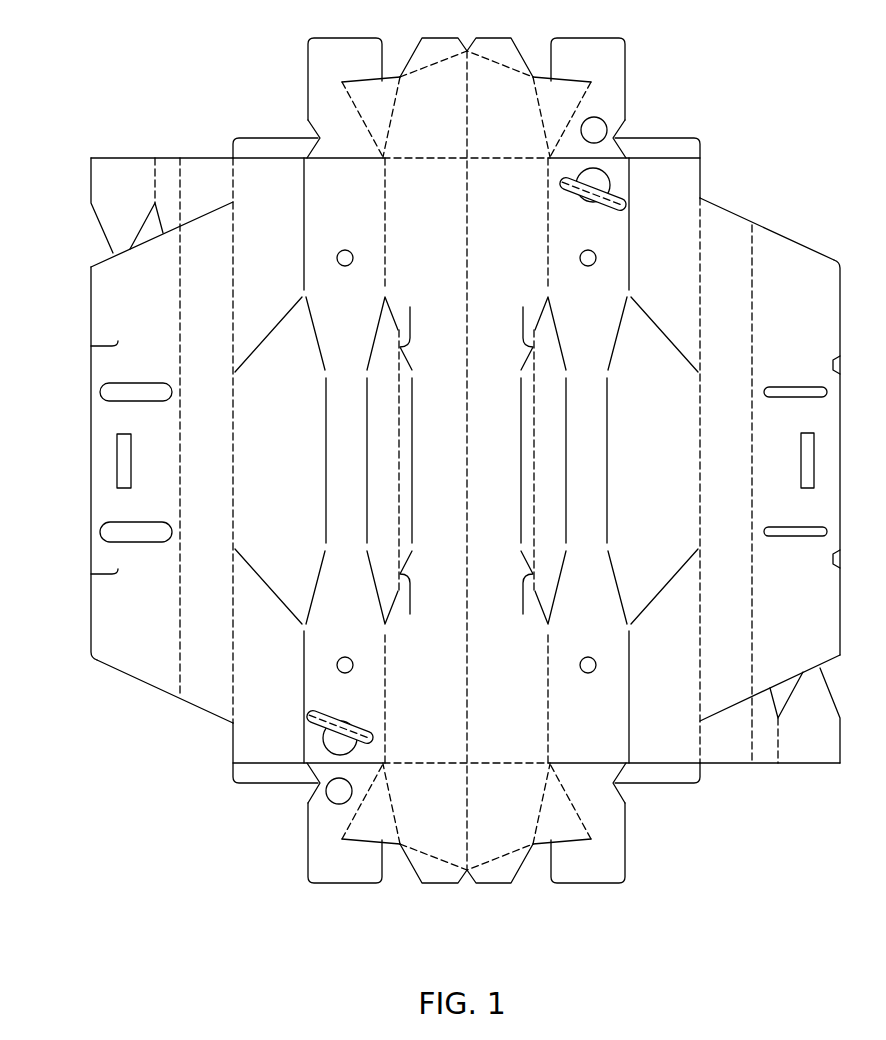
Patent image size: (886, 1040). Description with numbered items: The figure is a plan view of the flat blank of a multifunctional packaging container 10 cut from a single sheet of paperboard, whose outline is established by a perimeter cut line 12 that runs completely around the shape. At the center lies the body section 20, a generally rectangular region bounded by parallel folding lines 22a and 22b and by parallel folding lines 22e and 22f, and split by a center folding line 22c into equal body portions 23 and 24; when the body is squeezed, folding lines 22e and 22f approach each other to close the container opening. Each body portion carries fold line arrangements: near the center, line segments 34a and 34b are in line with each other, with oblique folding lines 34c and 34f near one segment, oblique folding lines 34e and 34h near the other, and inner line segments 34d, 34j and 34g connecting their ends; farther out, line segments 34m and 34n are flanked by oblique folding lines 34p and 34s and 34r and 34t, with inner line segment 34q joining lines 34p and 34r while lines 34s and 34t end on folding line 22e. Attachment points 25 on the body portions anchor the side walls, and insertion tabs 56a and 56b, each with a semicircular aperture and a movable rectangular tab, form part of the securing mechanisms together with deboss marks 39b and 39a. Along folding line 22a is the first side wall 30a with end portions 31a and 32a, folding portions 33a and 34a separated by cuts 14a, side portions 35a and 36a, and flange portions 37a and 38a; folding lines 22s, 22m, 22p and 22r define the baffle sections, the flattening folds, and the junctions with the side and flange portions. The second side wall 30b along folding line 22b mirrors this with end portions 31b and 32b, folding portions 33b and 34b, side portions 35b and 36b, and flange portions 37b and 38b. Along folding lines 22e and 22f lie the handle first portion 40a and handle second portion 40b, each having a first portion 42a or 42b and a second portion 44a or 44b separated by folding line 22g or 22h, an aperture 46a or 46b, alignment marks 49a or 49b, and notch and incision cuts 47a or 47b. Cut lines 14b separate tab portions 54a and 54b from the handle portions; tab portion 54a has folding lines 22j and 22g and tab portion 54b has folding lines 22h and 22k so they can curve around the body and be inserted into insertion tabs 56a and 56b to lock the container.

The multifunctional packaging container 10 is at (774, 120).
The perimeter cut line 12 is at (322, 38).
The cut line 14a is at (371, 80).
The cut line 14b is at (217, 203).
The body section 20 is at (255, 718).
The folding line 22a is at (490, 760).
The folding line 22b is at (460, 160).
The center folding line 22c is at (467, 213).
The folding line 22e is at (235, 435).
The folding line 22f is at (698, 435).
The folding line 22g is at (182, 175).
The folding line 22h is at (750, 483).
The folding line 22j is at (155, 170).
The folding line 22k is at (778, 747).
The folding line 22m is at (368, 133).
The folding line 22p is at (394, 110).
The folding line 22r is at (422, 65).
The folding line 22s is at (310, 147).
The body portion 23 is at (334, 199).
The body portion 24 is at (569, 636).
The attachment point 25 is at (345, 250).
The first side wall 30a is at (603, 798).
The second side wall 30b is at (316, 88).
The end portion 31a is at (322, 872).
The end portion 31b is at (322, 71).
The end portion 32a is at (579, 872).
The end portion 32b is at (579, 71).
The folding portion 33a is at (356, 832).
The folding portion 33b is at (356, 106).
The folding portion 34a is at (545, 832).
The folding portion 34b is at (537, 106).
The side portion 35a is at (424, 844).
The side portion 35b is at (406, 129).
The side portion 36a is at (476, 844).
The side portion 36b is at (477, 129).
The flange portion 37a is at (442, 870).
The flange portion 37b is at (442, 52).
The flange portion 38a is at (491, 870).
The flange portion 38b is at (491, 52).
The deboss mark 39a is at (330, 790).
The deboss mark 39b is at (600, 128).
The handle first portion 40a is at (135, 663).
The handle second portion 40b is at (807, 263).
The first portion 42a is at (110, 307).
The first portion 42b is at (779, 307).
The second portion 44a is at (184, 351).
The second portion 44b is at (711, 351).
The aperture 46a is at (117, 450).
The aperture 46b is at (814, 450).
The notch and incision cut 47a is at (91, 346).
The notch and incision cut 47b is at (842, 364).
The alignment deboss mark 49a is at (145, 383).
The alignment emboss mark 49b is at (787, 387).
The tab portion 54a is at (99, 199).
The tab portion 54b is at (802, 732).
The insertion tab 56a is at (597, 182).
The insertion tab 56b is at (345, 727).
The oblique folding line 34c is at (412, 603).
The inner line segment 34d is at (413, 470).
The oblique folding line 34e is at (398, 327).
The oblique folding line 34f is at (373, 597).
The inner line segment 34g is at (366, 470).
The oblique folding line 34h is at (375, 332).
The inner line segment 34j is at (400, 392).
The first line segment 34m is at (304, 653).
The second line segment 34n is at (304, 248).
The oblique folding line 34p is at (318, 572).
The inner line segment 34q is at (325, 508).
The oblique folding line 34r is at (315, 330).
The oblique folding line 34s is at (272, 590).
The oblique folding line 34t is at (280, 318).